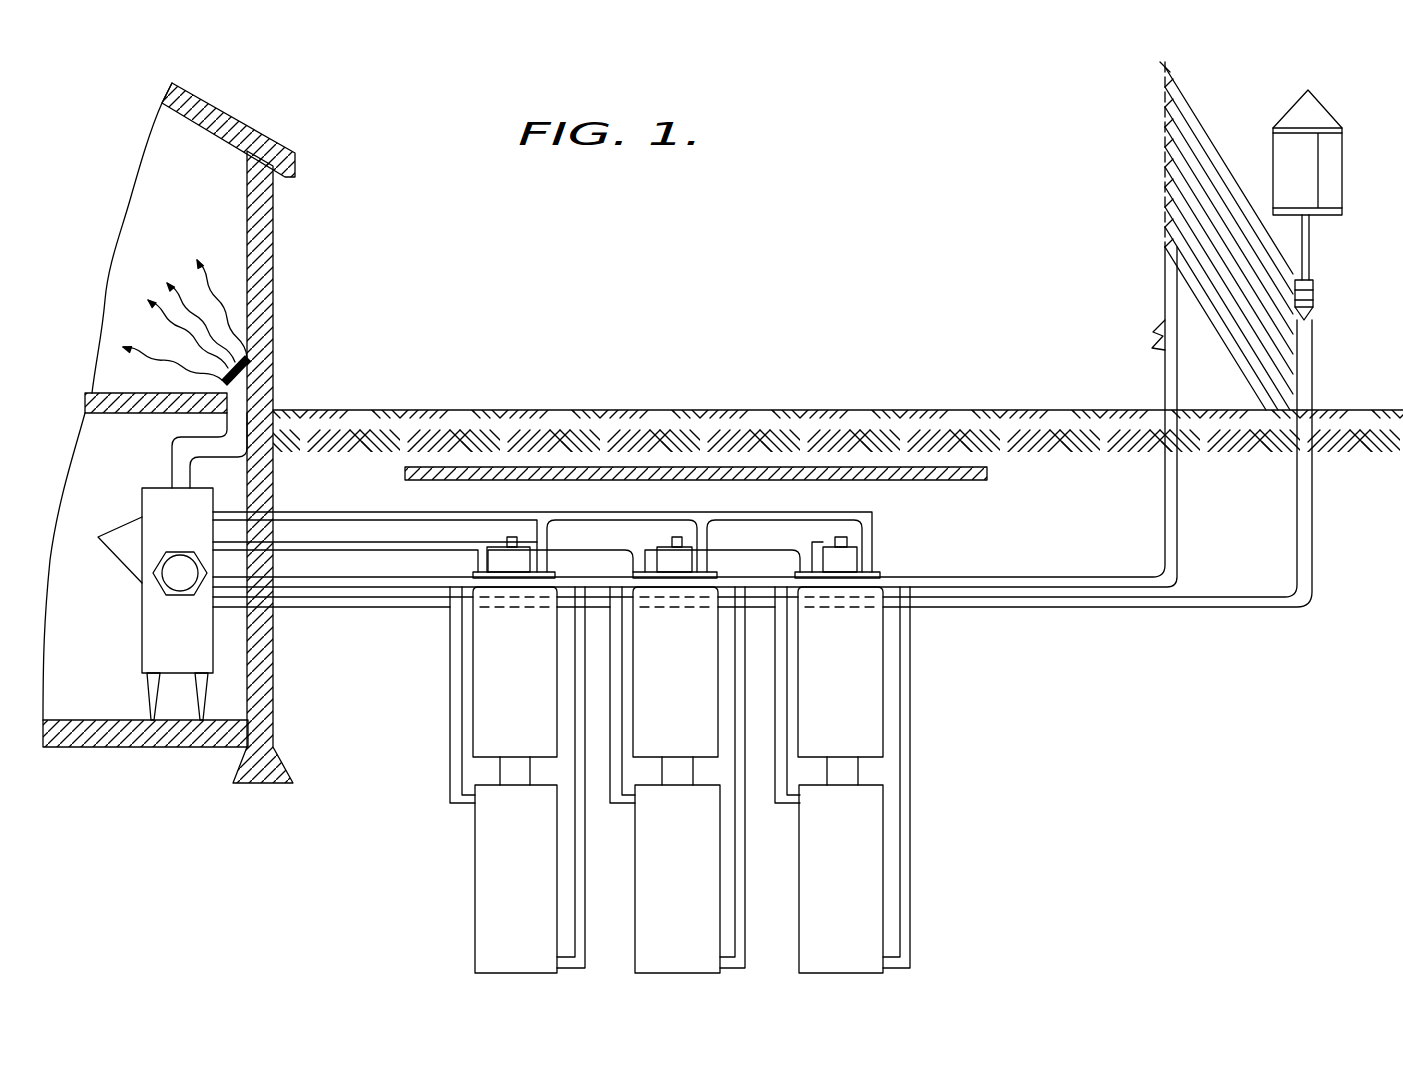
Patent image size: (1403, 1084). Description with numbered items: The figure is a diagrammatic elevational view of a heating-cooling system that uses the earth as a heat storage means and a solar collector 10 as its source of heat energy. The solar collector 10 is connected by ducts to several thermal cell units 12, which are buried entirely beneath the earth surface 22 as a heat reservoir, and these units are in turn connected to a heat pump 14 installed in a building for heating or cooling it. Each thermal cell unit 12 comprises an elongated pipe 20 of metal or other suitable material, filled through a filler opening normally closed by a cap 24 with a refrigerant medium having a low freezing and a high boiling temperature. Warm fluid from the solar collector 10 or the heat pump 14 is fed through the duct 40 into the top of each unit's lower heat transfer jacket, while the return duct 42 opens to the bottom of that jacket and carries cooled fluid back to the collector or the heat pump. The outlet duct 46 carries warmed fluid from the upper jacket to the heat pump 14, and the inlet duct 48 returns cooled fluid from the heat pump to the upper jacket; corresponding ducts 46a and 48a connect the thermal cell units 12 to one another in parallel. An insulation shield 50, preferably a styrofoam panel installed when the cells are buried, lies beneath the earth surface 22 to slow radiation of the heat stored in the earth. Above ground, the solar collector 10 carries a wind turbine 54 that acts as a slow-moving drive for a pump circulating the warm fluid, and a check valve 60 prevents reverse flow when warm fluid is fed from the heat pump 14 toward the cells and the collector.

The solar collector 10 is at (1156, 143).
The thermal cell unit 12 is at (470, 840).
The heat pump 14 is at (132, 597).
The elongated pipe 20 is at (533, 768).
The earth surface 22 is at (683, 410).
The cap 24 is at (845, 528).
The duct 40 is at (300, 590).
The return duct 42 is at (350, 600).
The outlet duct 46 is at (298, 512).
The inlet duct 48 is at (337, 548).
The duct 46a is at (688, 515).
The duct 48a is at (618, 548).
The insulation shield 50 is at (953, 482).
The wind turbine 54 is at (1270, 110).
The check valve 60 is at (1153, 327).